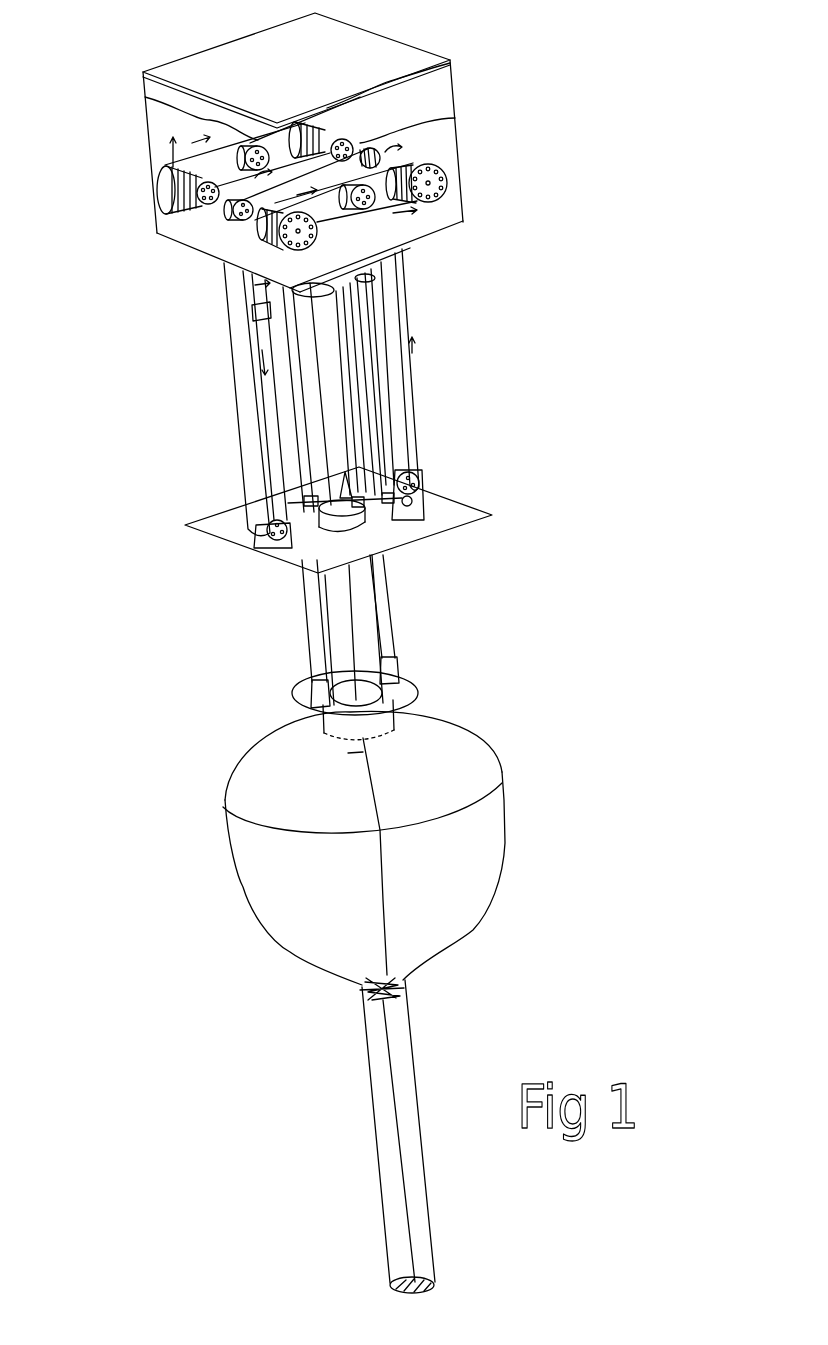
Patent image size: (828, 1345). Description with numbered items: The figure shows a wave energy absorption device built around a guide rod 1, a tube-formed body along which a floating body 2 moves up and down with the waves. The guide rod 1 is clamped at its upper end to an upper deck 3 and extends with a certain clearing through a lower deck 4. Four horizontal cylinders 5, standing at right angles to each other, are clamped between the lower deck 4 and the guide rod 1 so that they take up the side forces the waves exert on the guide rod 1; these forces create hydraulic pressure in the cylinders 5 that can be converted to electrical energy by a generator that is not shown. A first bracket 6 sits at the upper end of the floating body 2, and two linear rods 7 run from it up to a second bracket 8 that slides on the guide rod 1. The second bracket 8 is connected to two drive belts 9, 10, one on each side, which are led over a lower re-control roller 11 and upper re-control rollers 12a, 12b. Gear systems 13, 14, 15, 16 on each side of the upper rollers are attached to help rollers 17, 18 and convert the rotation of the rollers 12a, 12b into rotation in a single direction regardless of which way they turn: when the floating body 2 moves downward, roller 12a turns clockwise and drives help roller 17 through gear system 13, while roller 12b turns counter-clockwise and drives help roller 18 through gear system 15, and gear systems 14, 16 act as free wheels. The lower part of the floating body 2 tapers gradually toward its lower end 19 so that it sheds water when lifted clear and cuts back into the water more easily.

The guide rod 1 is at (400, 1072).
The floating body 2 is at (483, 867).
The upper deck 3 is at (437, 225).
The lower deck 4 is at (442, 510).
The horizontal cylinders 5 is at (387, 542).
The first bracket 6 is at (397, 674).
The linear rods 7 is at (382, 612).
The second bracket 8 is at (320, 283).
The drive belt 9 is at (404, 398).
The drive belt 10 is at (240, 440).
The lower re-control roller 11 is at (284, 548).
The upper re-control roller 12a is at (235, 217).
The upper re-control roller 12b is at (375, 145).
The gear system 13 is at (268, 248).
The gear system 14 is at (447, 182).
The gear system 15 is at (410, 57).
The gear system 16 is at (163, 178).
The help roller 17 is at (381, 216).
The help roller 18 is at (147, 78).
The lower end 19 is at (392, 993).